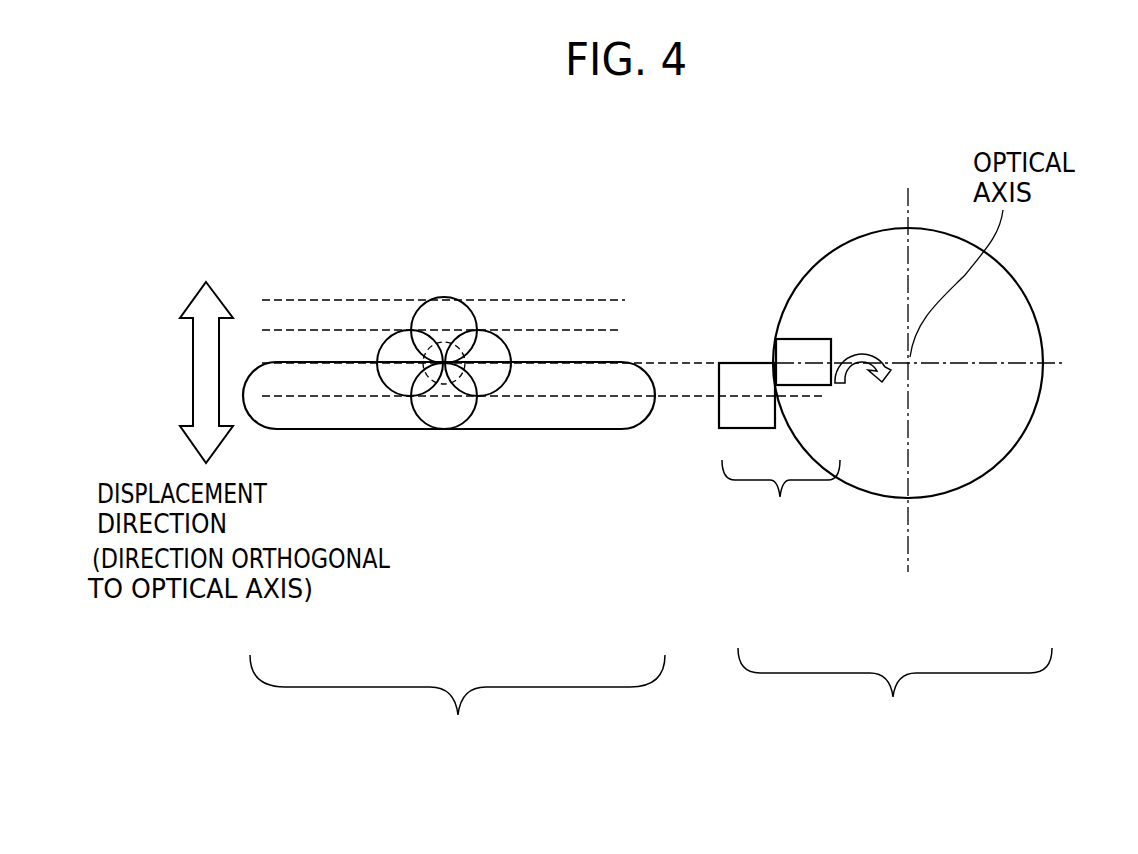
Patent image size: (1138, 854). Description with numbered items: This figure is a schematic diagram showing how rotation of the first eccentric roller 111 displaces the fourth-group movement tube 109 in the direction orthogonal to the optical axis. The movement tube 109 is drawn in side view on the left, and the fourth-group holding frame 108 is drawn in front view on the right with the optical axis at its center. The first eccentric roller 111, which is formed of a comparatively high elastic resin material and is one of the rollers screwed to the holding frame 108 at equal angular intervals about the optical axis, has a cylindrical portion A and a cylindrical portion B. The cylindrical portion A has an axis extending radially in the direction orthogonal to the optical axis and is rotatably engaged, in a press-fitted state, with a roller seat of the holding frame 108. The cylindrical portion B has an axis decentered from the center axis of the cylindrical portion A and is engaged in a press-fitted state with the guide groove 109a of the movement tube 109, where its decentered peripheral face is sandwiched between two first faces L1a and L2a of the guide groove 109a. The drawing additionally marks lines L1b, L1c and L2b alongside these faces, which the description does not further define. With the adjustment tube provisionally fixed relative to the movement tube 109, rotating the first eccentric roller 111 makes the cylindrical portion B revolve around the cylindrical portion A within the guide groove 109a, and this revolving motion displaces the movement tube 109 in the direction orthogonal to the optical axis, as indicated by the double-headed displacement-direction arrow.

The fourth-group movement tube 109 is at (454, 580).
The guide groove 109a is at (508, 438).
The fourth-group holding frame 108 is at (900, 483).
The first eccentric roller 111 is at (805, 421).
The first face of the guide groove L1a is at (613, 360).
The line L1b is at (620, 337).
The line L1c is at (604, 312).
The first face of the guide groove L2a is at (592, 432).
The line L2b is at (300, 398).
The cylindrical portion A is at (441, 342).
The cylindrical portion B is at (501, 412).